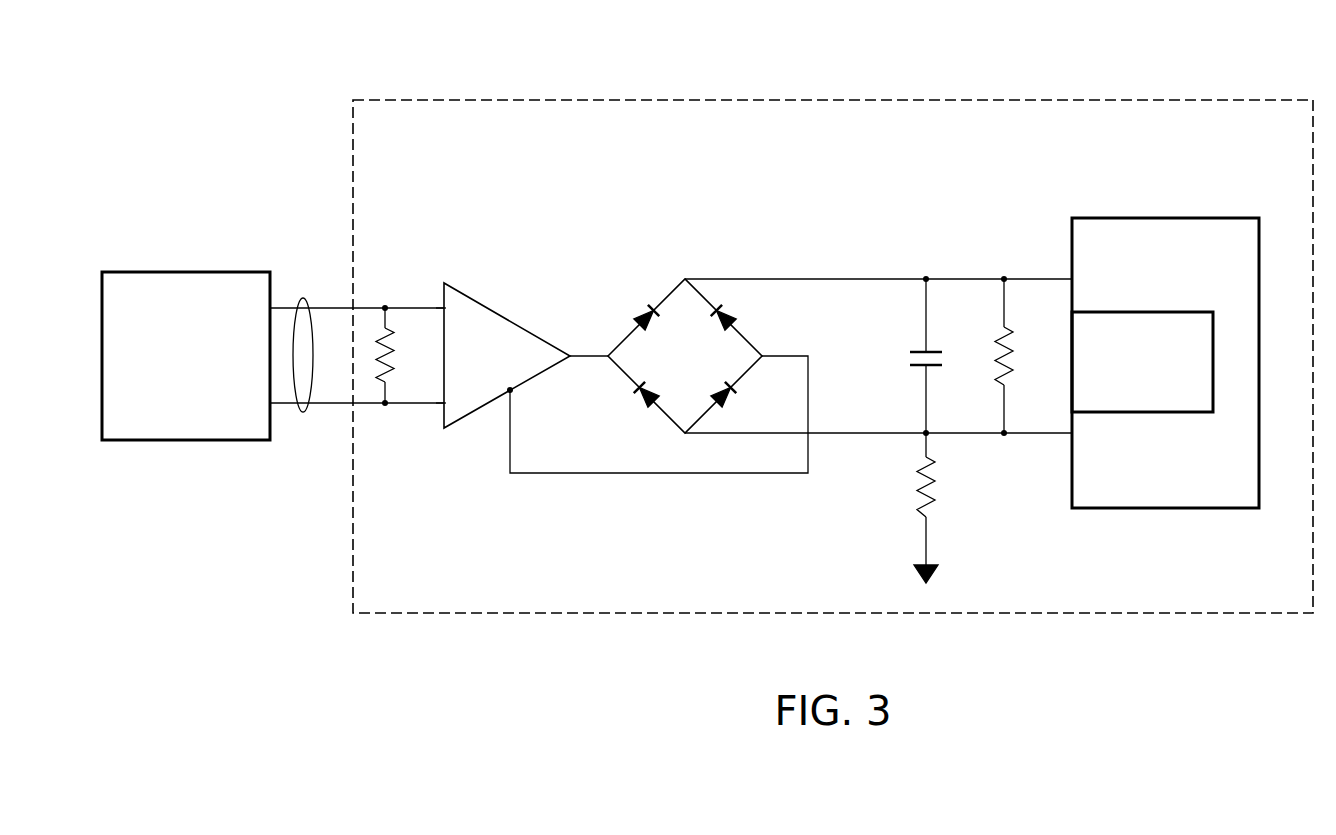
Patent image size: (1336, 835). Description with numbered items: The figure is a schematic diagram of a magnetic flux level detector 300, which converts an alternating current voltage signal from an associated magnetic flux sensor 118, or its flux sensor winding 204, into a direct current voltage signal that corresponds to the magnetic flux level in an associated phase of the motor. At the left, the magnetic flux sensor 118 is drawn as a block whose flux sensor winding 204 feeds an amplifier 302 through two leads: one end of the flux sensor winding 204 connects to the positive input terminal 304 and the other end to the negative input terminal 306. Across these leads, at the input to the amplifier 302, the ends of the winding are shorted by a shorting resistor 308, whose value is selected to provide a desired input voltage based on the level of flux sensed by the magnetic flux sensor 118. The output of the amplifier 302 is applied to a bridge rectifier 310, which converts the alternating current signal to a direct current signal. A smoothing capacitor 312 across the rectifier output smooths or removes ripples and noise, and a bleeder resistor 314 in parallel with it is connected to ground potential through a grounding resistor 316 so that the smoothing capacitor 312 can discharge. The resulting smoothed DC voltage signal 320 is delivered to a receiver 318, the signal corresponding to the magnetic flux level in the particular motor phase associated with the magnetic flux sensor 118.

The magnetic flux level detector 300 is at (765, 100).
The magnetic flux sensor 118 is at (185, 272).
The flux sensor winding 204 is at (303, 413).
The shorting resistor 308 is at (377, 340).
The positive input terminal 304 is at (443, 300).
The negative input terminal 306 is at (443, 412).
The amplifier 302 is at (511, 318).
The bridge rectifier 310 is at (665, 295).
The smoothing capacitor 312 is at (917, 352).
The bleeder resistor 314 is at (996, 355).
The grounding resistor 316 is at (934, 480).
The receiver 318 is at (1166, 218).
The smoothed DC voltage signal 320 is at (1136, 312).